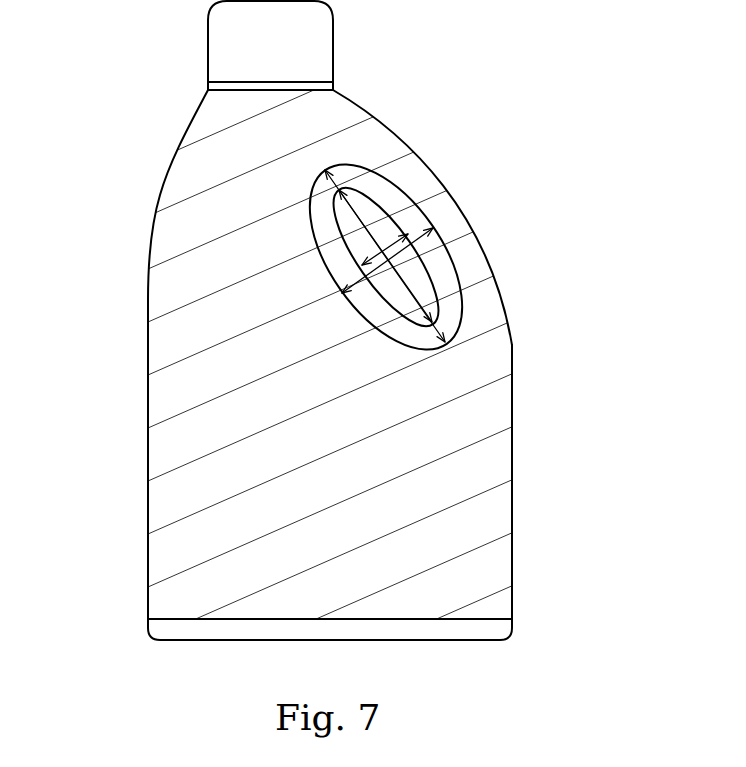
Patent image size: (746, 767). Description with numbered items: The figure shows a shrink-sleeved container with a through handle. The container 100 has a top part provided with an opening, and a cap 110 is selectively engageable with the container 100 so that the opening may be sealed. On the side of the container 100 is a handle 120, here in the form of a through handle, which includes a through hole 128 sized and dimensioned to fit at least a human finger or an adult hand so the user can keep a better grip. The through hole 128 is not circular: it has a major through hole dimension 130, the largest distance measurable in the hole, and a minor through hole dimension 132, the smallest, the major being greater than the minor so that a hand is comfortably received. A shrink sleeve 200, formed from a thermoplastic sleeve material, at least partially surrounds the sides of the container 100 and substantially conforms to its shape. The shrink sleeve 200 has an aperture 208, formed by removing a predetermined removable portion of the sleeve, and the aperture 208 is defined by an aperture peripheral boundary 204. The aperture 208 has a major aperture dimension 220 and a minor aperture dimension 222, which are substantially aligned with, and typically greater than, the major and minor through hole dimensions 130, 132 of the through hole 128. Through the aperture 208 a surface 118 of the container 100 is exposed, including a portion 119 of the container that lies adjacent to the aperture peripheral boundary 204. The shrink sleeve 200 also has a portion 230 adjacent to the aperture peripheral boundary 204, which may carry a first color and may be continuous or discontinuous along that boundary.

The container 100 is at (147, 640).
The cap 110 is at (313, 43).
The handle 120 is at (417, 137).
The major through hole dimension 130 is at (373, 223).
The minor through hole dimension 132 is at (440, 223).
The through hole 128 is at (422, 275).
The major aperture dimension 220 is at (323, 172).
The minor aperture dimension 222 is at (365, 303).
The portion of the container 119 is at (331, 268).
The aperture 208 is at (308, 249).
The portion of the shrink sleeve 230 is at (320, 290).
The surface of the container 118 is at (387, 318).
The aperture peripheral boundary 204 is at (392, 347).
The shrink sleeve 200 is at (480, 587).